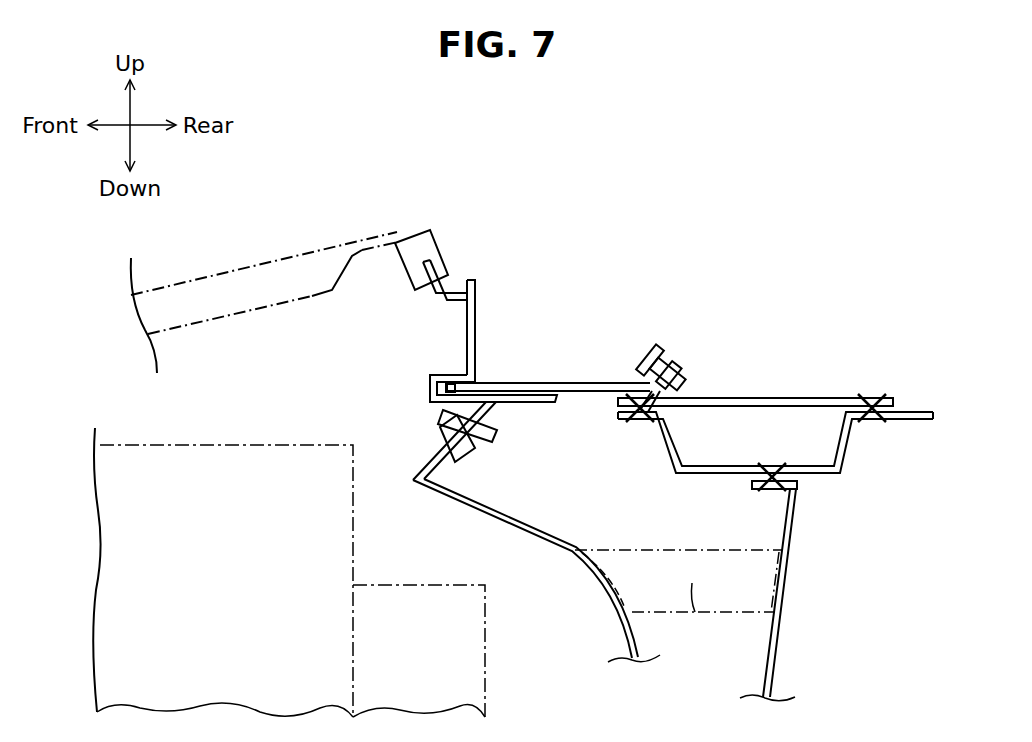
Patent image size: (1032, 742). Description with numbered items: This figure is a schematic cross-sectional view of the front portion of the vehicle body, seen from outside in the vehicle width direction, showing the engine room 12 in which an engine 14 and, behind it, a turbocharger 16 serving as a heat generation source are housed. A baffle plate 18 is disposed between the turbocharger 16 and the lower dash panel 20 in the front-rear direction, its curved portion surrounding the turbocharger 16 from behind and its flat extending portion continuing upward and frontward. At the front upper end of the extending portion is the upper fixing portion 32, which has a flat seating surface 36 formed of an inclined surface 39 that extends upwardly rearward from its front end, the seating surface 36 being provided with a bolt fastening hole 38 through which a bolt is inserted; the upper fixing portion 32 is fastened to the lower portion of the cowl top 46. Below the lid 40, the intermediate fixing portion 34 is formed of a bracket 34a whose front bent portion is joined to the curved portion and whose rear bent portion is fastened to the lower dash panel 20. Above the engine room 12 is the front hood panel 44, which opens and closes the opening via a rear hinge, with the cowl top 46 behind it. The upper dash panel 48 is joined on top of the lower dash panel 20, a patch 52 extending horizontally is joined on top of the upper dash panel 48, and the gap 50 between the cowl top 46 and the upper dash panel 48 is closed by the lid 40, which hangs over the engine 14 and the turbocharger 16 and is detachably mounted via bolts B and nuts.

The engine room 12 is at (356, 366).
The engine 14 is at (262, 443).
The turbocharger 16 is at (420, 585).
The baffle plate 18 is at (568, 556).
The lower dash panel 20 is at (787, 588).
The upper fixing portion 32 is at (433, 409).
The intermediate fixing portion 34 is at (685, 616).
The bracket 34a is at (695, 612).
The seating surface 36 is at (433, 455).
The bolt fastening hole 38 is at (467, 440).
The inclined surface 39 is at (458, 398).
The lid 40 is at (593, 382).
The front hood panel 44 is at (300, 253).
The cowl top 46 is at (478, 328).
The upper dash panel 48 is at (818, 478).
The gap 50 is at (605, 395).
The patch 52 is at (752, 398).
The bolt B is at (650, 350).